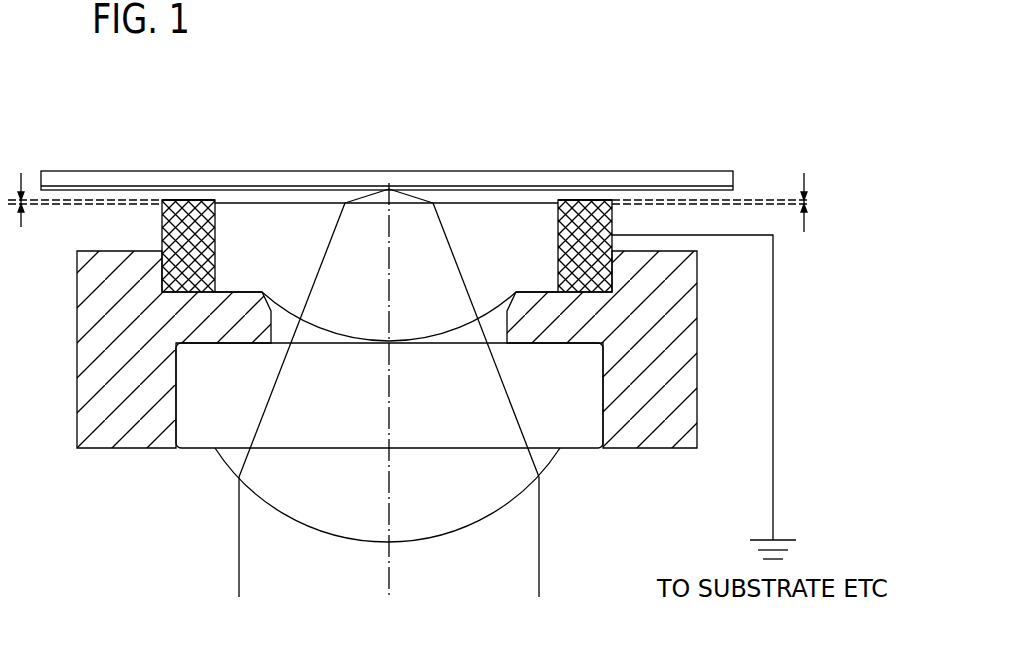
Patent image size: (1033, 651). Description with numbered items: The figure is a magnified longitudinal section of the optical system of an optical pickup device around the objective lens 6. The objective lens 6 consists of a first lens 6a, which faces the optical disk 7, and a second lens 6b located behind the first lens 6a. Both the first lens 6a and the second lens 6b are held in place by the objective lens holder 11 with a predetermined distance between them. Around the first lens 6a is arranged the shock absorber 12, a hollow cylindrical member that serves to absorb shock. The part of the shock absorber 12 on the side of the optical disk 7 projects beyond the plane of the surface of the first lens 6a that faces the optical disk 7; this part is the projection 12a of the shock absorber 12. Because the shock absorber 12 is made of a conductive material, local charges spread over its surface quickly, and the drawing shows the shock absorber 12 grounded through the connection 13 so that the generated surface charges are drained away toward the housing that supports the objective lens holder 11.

The objective lens 6 is at (332, 113).
The first lens 6a is at (312, 223).
The second lens 6b is at (243, 370).
The optical disk 7 is at (461, 178).
The objective lens holder 11 is at (119, 437).
The shock absorber 12 is at (173, 227).
The projection 12a is at (188, 200).
The ground connection 13 is at (782, 538).